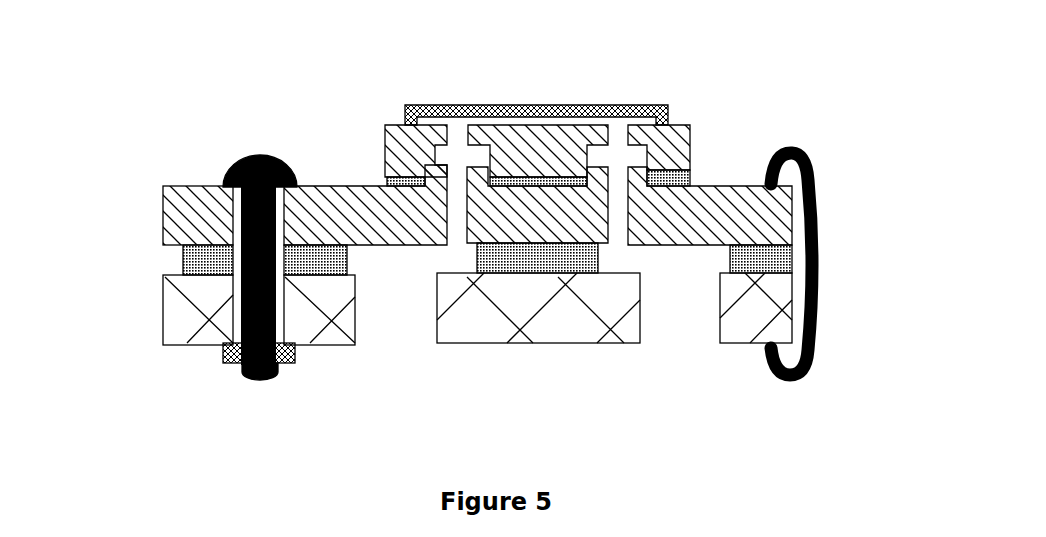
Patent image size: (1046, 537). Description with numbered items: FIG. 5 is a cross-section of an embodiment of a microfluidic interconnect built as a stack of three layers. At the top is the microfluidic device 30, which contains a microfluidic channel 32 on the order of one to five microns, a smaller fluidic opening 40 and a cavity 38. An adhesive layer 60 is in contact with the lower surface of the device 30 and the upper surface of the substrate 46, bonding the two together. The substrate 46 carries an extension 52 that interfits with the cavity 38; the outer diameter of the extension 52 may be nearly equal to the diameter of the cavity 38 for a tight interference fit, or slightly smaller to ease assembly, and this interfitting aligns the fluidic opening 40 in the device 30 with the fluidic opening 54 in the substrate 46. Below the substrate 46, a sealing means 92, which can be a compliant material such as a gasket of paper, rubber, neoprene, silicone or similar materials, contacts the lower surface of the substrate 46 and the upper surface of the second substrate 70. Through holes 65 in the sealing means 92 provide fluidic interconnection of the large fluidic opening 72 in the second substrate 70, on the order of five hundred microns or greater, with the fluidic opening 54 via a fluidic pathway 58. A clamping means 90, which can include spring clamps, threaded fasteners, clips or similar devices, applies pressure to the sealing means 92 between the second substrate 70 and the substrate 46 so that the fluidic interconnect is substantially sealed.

The microfluidic device 30 is at (713, 98).
The microfluidic channel 32 is at (505, 105).
The cavity 38 is at (474, 165).
The fluidic opening 40 is at (620, 160).
The substrate 46 is at (162, 205).
The extension 52 is at (433, 172).
The fluidic opening 54 is at (652, 130).
The fluidic pathway 58 is at (620, 210).
The adhesive layer 60 is at (693, 177).
The through holes 65 is at (692, 279).
The second substrate 70 is at (173, 327).
The fluidic opening 72 is at (408, 324).
The clamping means 90 is at (237, 163).
The sealing means 92 is at (183, 262).